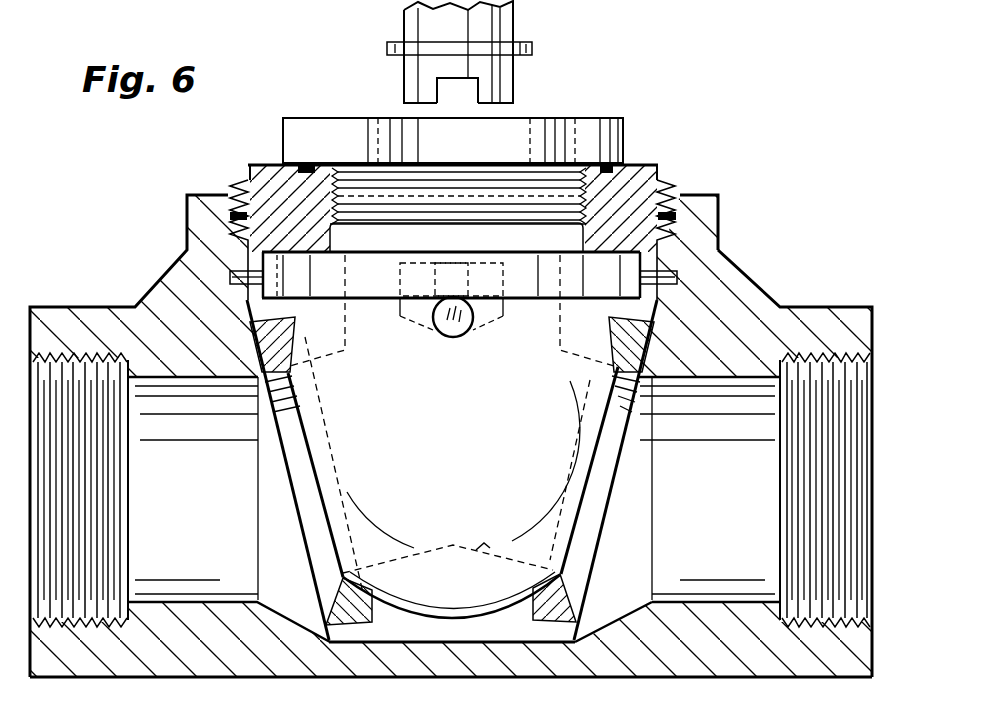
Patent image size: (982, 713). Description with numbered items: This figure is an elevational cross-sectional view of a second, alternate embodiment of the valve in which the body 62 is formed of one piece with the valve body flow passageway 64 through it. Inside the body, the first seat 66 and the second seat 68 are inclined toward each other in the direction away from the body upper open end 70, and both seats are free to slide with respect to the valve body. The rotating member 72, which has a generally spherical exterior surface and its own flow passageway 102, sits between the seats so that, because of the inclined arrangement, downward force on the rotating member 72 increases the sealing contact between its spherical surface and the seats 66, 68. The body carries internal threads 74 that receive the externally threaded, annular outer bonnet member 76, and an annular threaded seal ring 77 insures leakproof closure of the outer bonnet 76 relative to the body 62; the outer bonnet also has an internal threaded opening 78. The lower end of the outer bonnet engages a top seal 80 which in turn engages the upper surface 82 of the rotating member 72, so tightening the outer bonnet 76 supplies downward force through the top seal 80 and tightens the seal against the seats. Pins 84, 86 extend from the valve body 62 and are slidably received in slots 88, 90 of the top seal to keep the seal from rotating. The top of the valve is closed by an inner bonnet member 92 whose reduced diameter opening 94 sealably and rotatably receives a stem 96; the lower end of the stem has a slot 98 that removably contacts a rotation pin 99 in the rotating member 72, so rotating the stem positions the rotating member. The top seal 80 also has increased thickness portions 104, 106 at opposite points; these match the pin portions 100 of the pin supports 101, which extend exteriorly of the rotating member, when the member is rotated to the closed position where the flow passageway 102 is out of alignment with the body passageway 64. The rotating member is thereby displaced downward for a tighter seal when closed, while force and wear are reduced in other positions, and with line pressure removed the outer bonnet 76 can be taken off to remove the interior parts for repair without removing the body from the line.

The body 62 is at (725, 652).
The valve body flow passageway 64 is at (742, 595).
The first seat 66 is at (577, 620).
The second seat 68 is at (373, 603).
The body upper open end 70 is at (700, 193).
The rotating member 72 is at (482, 603).
The internal threads 74 is at (245, 250).
The outer bonnet member 76 is at (600, 213).
The annular threaded seal ring 77 is at (677, 190).
The internal threaded opening 78 is at (565, 172).
The top seal 80 is at (372, 280).
The upper surface 82 is at (533, 290).
The pin 84 is at (678, 270).
The pin 86 is at (235, 275).
The slot 88 is at (663, 298).
The slot 90 is at (247, 297).
The inner bonnet member 92 is at (562, 138).
The reduced diameter opening 94 is at (410, 207).
The stem 96 is at (420, 23).
The slot 98 is at (472, 97).
The rotation pin 99 is at (455, 262).
The pin portions 100 is at (450, 328).
The pin supports 101 is at (492, 330).
The flow passageway 102 is at (483, 550).
The increased thickness portion 104 is at (318, 345).
The increased thickness portion 106 is at (594, 340).